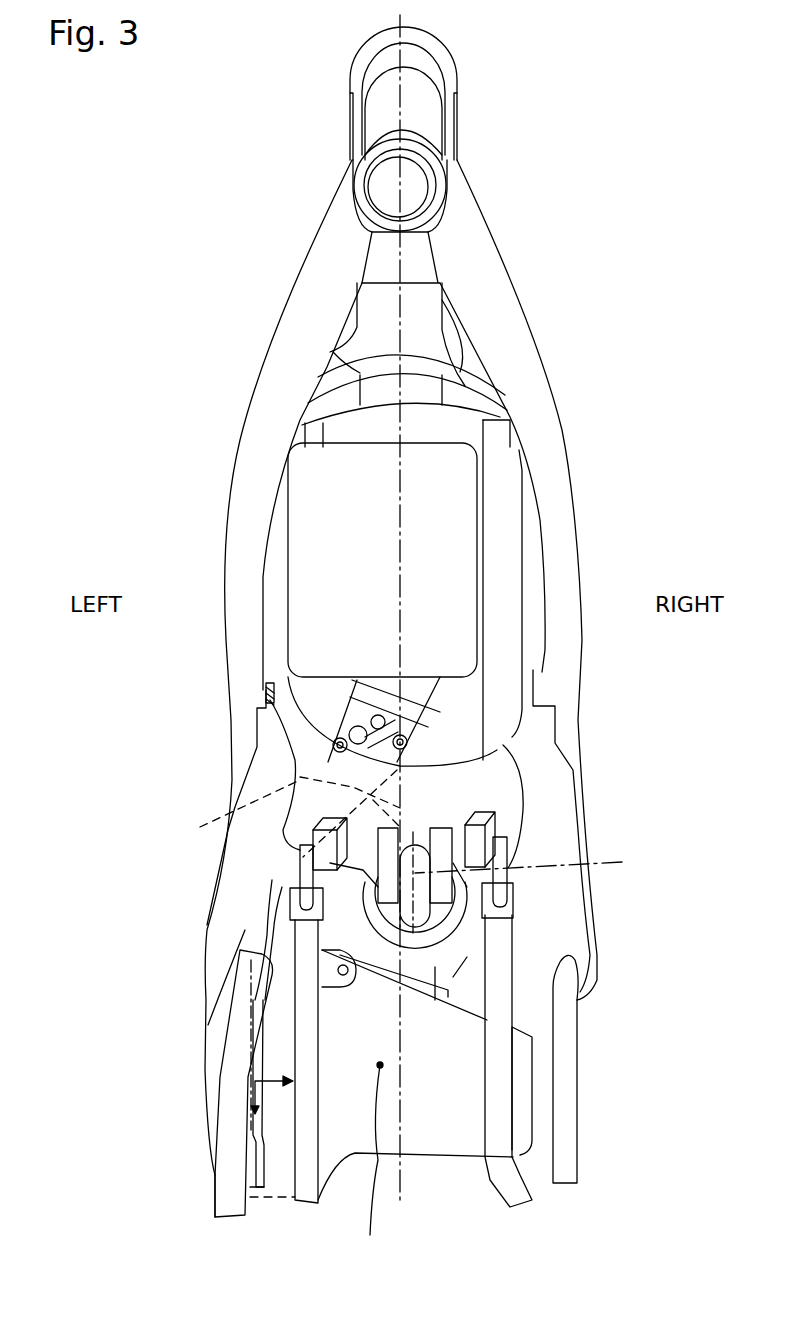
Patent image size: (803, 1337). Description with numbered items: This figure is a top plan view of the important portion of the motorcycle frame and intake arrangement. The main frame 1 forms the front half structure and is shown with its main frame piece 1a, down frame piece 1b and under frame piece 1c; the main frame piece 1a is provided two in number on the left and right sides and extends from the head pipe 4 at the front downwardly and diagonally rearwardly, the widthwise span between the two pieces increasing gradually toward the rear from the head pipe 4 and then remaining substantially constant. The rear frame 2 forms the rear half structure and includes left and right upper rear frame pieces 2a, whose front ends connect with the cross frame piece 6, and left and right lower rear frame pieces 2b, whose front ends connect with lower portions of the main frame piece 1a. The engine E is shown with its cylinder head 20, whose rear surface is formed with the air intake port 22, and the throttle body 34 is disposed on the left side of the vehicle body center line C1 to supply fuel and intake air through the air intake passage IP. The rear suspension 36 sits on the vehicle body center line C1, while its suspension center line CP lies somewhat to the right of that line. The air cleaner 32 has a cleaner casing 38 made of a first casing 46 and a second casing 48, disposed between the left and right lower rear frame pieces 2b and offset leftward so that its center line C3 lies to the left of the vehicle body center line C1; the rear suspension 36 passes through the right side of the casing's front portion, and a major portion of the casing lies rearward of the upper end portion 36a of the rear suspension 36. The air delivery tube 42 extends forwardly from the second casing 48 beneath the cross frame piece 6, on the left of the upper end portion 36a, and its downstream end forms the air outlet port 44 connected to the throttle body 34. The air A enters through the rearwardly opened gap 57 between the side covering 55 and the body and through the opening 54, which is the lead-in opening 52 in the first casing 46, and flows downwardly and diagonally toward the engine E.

The vehicle body center line C1 is at (400, 45).
The head pipe 4 is at (430, 114).
The main frame 1 is at (422, 667).
The main frame piece 1a is at (540, 275).
The down frame piece 1b is at (427, 302).
The under frame piece 1c is at (256, 745).
The cylinder head 20 is at (328, 493).
The engine E is at (314, 560).
The air intake port 22 is at (327, 680).
The throttle body 34 is at (265, 698).
The air intake passage IP is at (326, 978).
The air outlet port 44 is at (227, 820).
The air delivery tube 42 is at (290, 863).
The air cleaner 32 is at (447, 1165).
The cleaner casing 38 is at (192, 923).
The second casing 48 is at (288, 922).
The first casing 46 is at (262, 965).
The cross frame piece 6 is at (505, 822).
The suspension center line CP is at (538, 862).
The upper end portion 36a is at (420, 897).
The rear suspension 36 is at (470, 953).
The rear frame 2 is at (392, 1066).
The upper rear frame piece 2a is at (297, 1027).
The lower rear frame piece 2b is at (615, 1130).
The opening 54 is at (252, 1073).
The lead-in opening 52 is at (192, 1073).
The air A is at (253, 1103).
The side covering 55 is at (214, 1203).
The gap 57 is at (252, 1190).
The center line C3 is at (368, 1164).